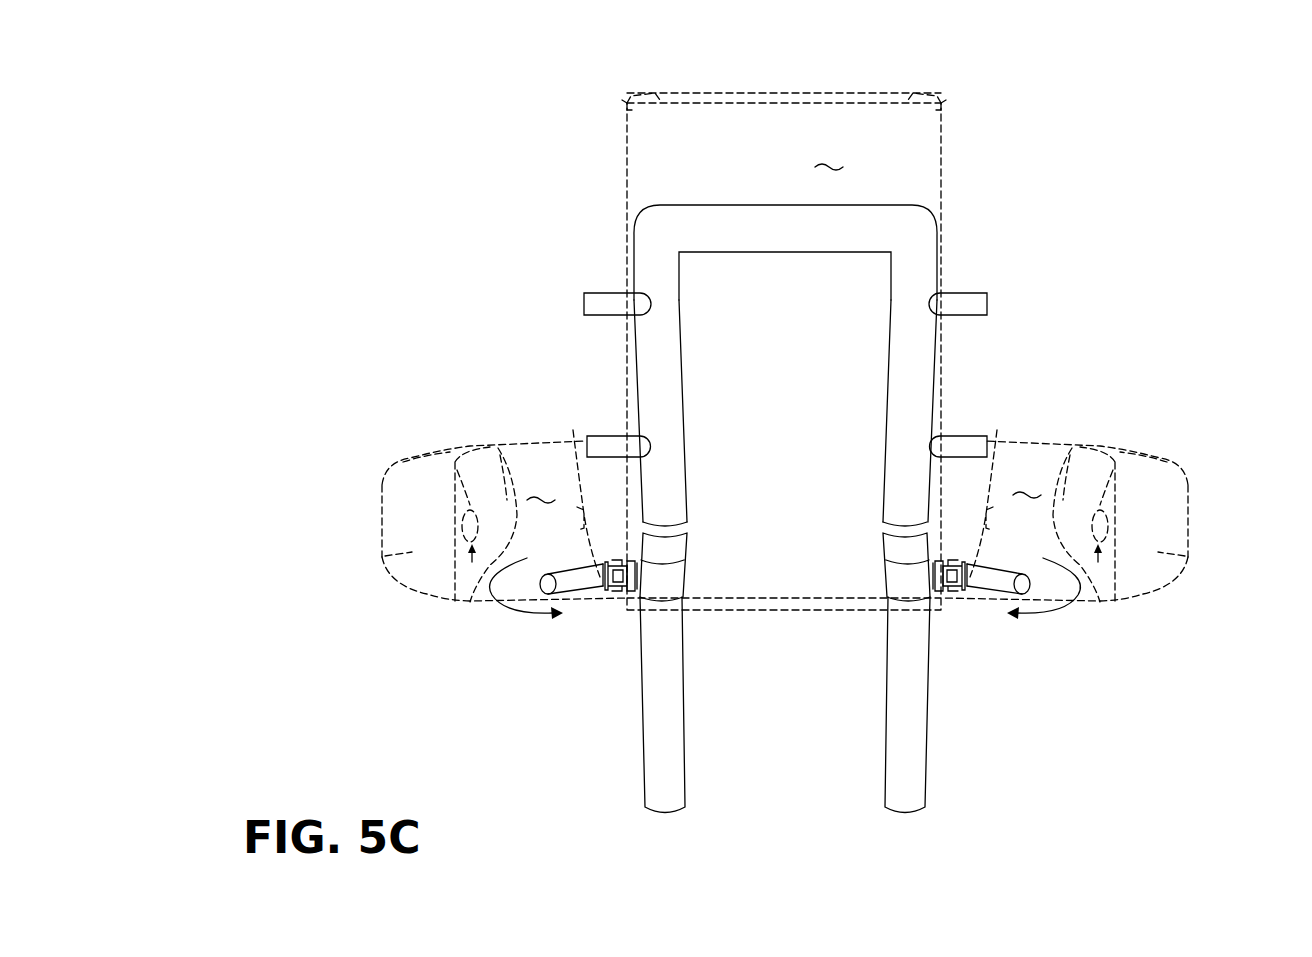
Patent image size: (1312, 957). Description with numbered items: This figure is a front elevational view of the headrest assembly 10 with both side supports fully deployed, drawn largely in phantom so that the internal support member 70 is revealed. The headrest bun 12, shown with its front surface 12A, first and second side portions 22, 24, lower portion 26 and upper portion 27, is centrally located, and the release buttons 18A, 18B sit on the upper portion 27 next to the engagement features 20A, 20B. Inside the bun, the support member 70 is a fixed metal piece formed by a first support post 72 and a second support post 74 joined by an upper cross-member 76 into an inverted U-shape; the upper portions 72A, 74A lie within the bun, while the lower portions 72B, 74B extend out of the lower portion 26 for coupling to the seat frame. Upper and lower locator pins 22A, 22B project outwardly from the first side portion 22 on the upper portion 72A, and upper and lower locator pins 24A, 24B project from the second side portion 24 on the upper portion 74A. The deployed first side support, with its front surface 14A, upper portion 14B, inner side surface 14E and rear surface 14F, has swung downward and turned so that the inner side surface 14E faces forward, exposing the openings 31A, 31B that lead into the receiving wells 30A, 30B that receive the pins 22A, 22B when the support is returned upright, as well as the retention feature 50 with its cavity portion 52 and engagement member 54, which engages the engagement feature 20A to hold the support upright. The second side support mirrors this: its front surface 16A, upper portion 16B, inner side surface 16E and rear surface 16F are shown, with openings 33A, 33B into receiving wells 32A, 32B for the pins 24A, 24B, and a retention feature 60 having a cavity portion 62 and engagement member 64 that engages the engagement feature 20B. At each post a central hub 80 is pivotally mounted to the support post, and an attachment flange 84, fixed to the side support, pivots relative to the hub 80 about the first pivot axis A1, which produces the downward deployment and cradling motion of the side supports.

The headrest assembly 10 is at (1062, 147).
The headrest bun 12 is at (748, 88).
The front surface 12A is at (829, 156).
The front surface 14A is at (488, 604).
The upper portion 14B is at (385, 560).
The inner side surface 14E is at (540, 489).
The rear surface 14F is at (380, 512).
The front surface 16A is at (1090, 603).
The upper portion 16B is at (1185, 570).
The inner side surface 16E is at (1028, 484).
The rear surface 16F is at (1190, 520).
The release button 18A is at (650, 92).
The release button 18B is at (905, 92).
The engagement feature 20A is at (622, 113).
The engagement feature 20B is at (950, 112).
The first side portion 22 is at (583, 358).
The upper locator pin 22A is at (600, 306).
The lower locator pin 22B is at (605, 448).
The second side portion 24 is at (1003, 349).
The upper locator pin 24A is at (965, 305).
The lower locator pin 24B is at (953, 447).
The lower portion 26 is at (810, 612).
The upper portion 27 is at (795, 92).
The upper receiving well 30A is at (500, 460).
The lower receiving well 30B is at (563, 447).
The opening 31A is at (471, 603).
The opening 31B is at (603, 595).
The upper receiving well 32A is at (1045, 445).
The lower receiving well 32B is at (960, 450).
The opening 33A is at (1080, 603).
The opening 33B is at (990, 598).
The retention feature 50 is at (450, 545).
The cavity portion 52 is at (443, 447).
The engagement member 54 is at (427, 598).
The retention feature 60 is at (1103, 603).
The cavity portion 62 is at (1108, 455).
The engagement member 64 is at (1180, 470).
The support member 70 is at (702, 798).
The first support post 72 is at (697, 584).
The upper portion 72A is at (665, 330).
The lower portion 72B is at (663, 650).
The second support post 74 is at (884, 589).
The upper portion 74A is at (907, 375).
The lower portion 74B is at (904, 650).
The upper cross-member 76 is at (767, 232).
The central hub 80 is at (626, 600).
The attachment flange 84 is at (578, 600).
The first pivot axis A1 is at (782, 638).